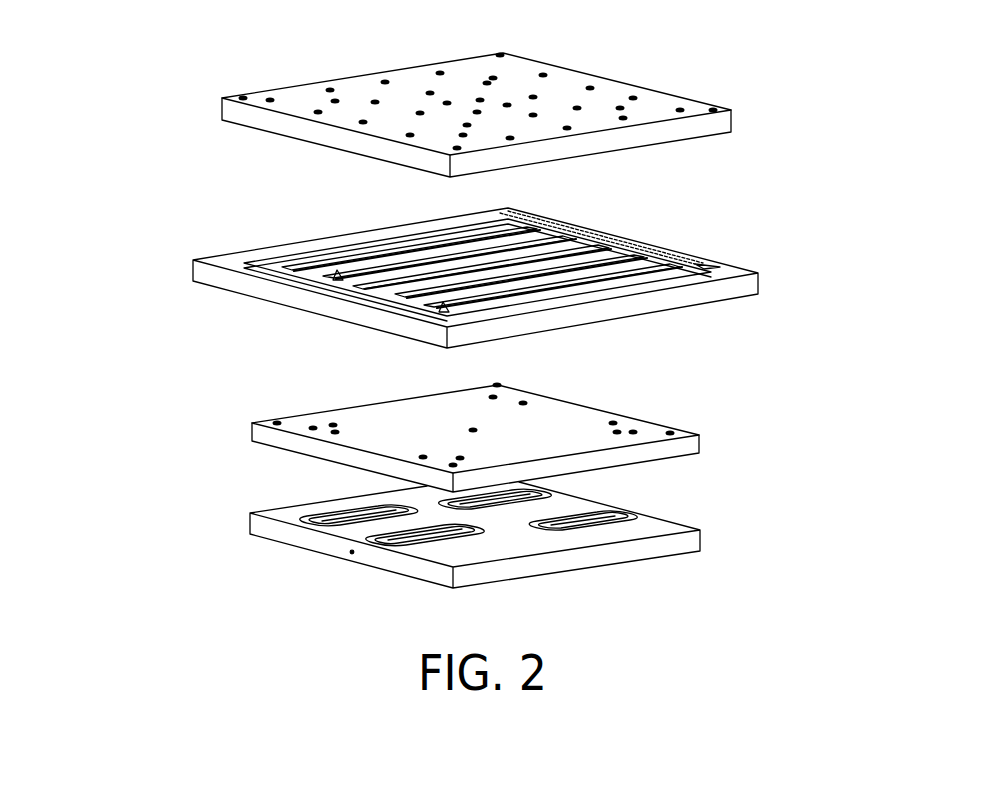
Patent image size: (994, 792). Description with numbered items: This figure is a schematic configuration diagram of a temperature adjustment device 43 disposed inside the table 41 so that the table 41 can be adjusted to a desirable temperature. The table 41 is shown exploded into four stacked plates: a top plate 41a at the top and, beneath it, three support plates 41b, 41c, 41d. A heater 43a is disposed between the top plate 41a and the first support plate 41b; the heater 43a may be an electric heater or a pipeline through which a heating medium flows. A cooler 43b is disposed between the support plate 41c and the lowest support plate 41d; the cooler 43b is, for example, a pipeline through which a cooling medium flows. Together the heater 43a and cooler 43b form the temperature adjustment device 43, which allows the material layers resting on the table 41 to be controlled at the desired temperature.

The table 41 is at (82, 182).
The top plate 41a is at (243, 115).
The support plate 41b is at (212, 277).
The support plate 41c is at (254, 427).
The support plate 41d is at (263, 528).
The temperature adjustment device 43 is at (873, 342).
The heater 43a is at (690, 264).
The cooler 43b is at (672, 514).